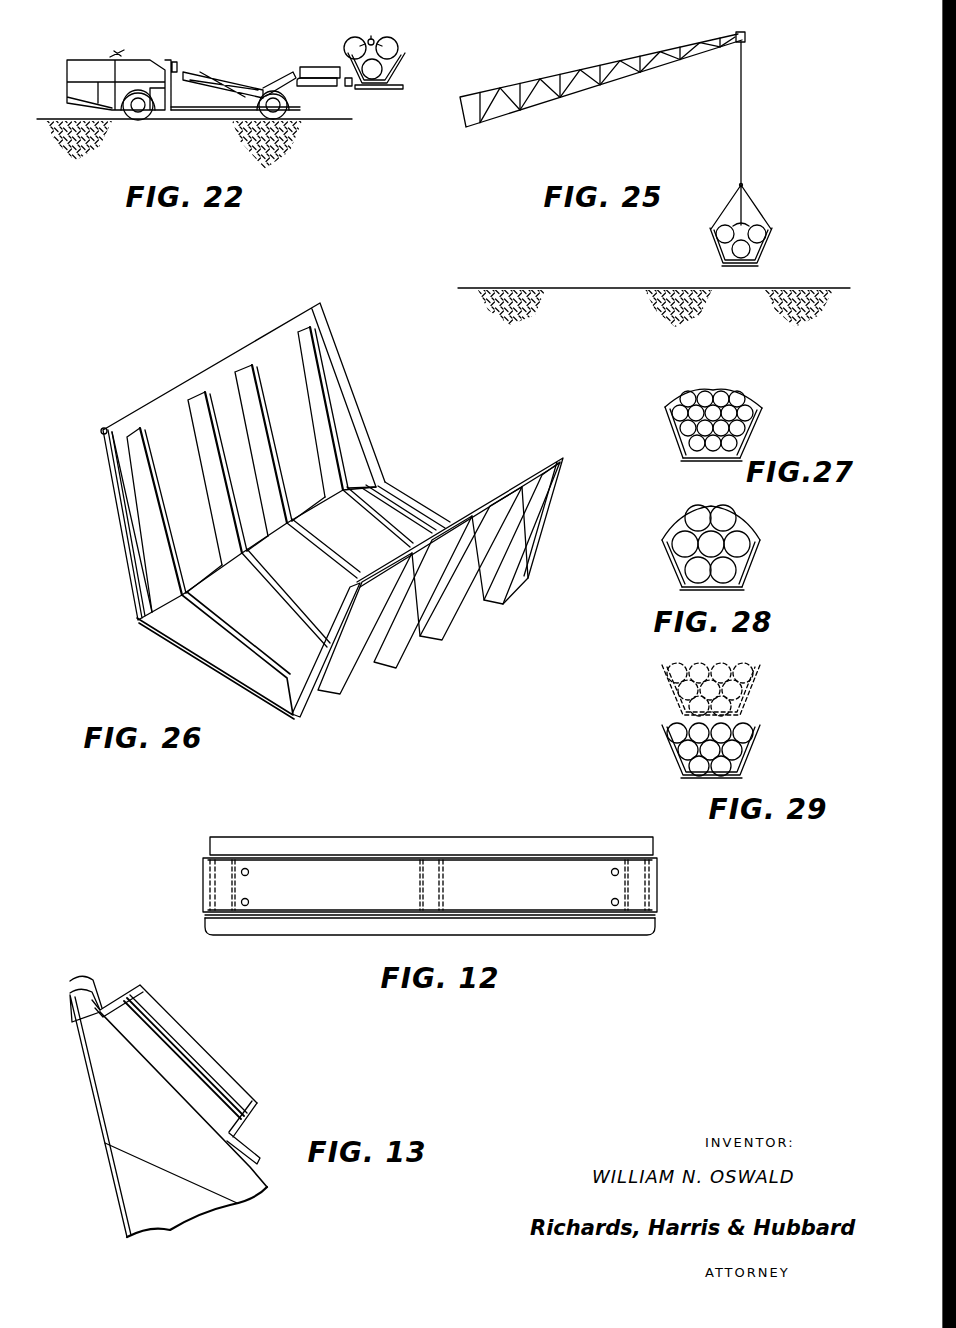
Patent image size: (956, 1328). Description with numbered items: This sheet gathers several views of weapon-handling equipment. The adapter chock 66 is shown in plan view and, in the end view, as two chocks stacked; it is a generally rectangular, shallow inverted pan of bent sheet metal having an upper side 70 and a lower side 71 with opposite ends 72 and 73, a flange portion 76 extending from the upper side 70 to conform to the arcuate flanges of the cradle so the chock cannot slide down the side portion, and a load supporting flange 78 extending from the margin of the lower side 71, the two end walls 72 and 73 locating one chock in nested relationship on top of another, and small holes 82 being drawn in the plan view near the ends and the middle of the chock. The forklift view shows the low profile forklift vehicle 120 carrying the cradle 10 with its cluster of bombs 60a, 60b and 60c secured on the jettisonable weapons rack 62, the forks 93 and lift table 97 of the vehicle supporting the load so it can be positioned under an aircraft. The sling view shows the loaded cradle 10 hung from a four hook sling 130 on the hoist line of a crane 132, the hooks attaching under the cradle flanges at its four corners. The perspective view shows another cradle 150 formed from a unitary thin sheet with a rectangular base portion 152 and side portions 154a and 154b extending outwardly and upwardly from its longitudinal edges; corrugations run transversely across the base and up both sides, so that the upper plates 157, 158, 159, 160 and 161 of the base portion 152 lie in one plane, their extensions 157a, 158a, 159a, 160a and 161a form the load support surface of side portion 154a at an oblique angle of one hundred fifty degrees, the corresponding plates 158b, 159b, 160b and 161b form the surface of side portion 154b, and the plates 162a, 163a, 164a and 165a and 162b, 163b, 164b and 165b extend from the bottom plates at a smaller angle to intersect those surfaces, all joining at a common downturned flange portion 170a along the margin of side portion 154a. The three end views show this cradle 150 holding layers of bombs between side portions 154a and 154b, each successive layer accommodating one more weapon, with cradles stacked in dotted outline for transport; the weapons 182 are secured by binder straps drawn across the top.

In FIG. 22, the cradle 10 is at (413, 67).
In FIG. 22, the jettisonable weapons rack 62 is at (376, 40).
In FIG. 22, the bomb 60a is at (385, 72).
In FIG. 22, the bomb 60b is at (344, 45).
In FIG. 22, the bomb 60c is at (399, 45).
In FIG. 22, the forks 93 is at (350, 95).
In FIG. 22, the lift table 97 is at (261, 89).
In FIG. 22, the forklift vehicle 120 is at (260, 64).
In FIG. 25, the four hook sling 130 is at (750, 194).
In FIG. 25, the crane 132 is at (597, 60).
In FIG. 26, the cradle 150 is at (328, 505).
In FIG. 27, the cradle 150 is at (713, 429).
In FIG. 28, the cradle 150 is at (716, 555).
In FIG. 29, the cradle 150 is at (712, 720).
In FIG. 26, the base portion 152 is at (405, 484).
In FIG. 26, the side portion 154a is at (231, 441).
In FIG. 27, the side portion 154a is at (668, 423).
In FIG. 28, the side portion 154a is at (673, 561).
In FIG. 26, the side portion 154b is at (453, 603).
In FIG. 27, the side portion 154b is at (757, 432).
In FIG. 28, the side portion 154b is at (757, 561).
In FIG. 26, the upper plate 157 is at (227, 632).
In FIG. 26, the upper plate 158 is at (230, 603).
In FIG. 26, the upper plate 159 is at (323, 535).
In FIG. 26, the upper plate 160 is at (365, 546).
In FIG. 26, the upper plate 161 is at (420, 510).
In FIG. 26, the upper plate extension 157a is at (143, 505).
In FIG. 26, the upper plate extension 158a is at (163, 422).
In FIG. 26, the upper plate extension 159a is at (223, 378).
In FIG. 26, the upper plate extension 160a is at (287, 345).
In FIG. 26, the upper plate extension 161a is at (325, 337).
In FIG. 26, the plate 162a is at (122, 416).
In FIG. 26, the plate 163a is at (200, 403).
In FIG. 26, the plate 164a is at (248, 370).
In FIG. 26, the plate 165a is at (307, 322).
In FIG. 26, the downturned flange portion 170a is at (101, 428).
In FIG. 26, the plate 158b is at (372, 610).
In FIG. 26, the plate 159b is at (472, 588).
In FIG. 26, the plate 160b is at (492, 523).
In FIG. 26, the plate 161b is at (550, 473).
In FIG. 26, the plate 162b is at (342, 688).
In FIG. 26, the plate 163b is at (403, 642).
In FIG. 26, the plate 164b is at (443, 618).
In FIG. 26, the plate 165b is at (505, 590).
In FIG. 27, the pipes 182 is at (748, 403).
In FIG. 28, the pipes 182 is at (750, 528).
In FIG. 29, the pipes 182 is at (672, 724).
In FIG. 12, the adapter chock 66 is at (429, 875).
In FIG. 13, the adapter chock 66 is at (184, 1071).
In FIG. 12, the upper side 70 is at (273, 858).
In FIG. 13, the upper side 70 is at (122, 990).
In FIG. 12, the lower side 71 is at (341, 915).
In FIG. 13, the lower side 71 is at (255, 1131).
In FIG. 12, the end 72 is at (203, 892).
In FIG. 13, the end 72 is at (190, 1046).
In FIG. 12, the end 73 is at (658, 900).
In FIG. 12, the flange portion 76 is at (366, 845).
In FIG. 13, the flange portion 76 is at (82, 980).
In FIG. 12, the load supporting flange 78 is at (590, 927).
In FIG. 13, the load supporting flange 78 is at (262, 1158).
In FIG. 12, the bolt holes 82 is at (238, 878).